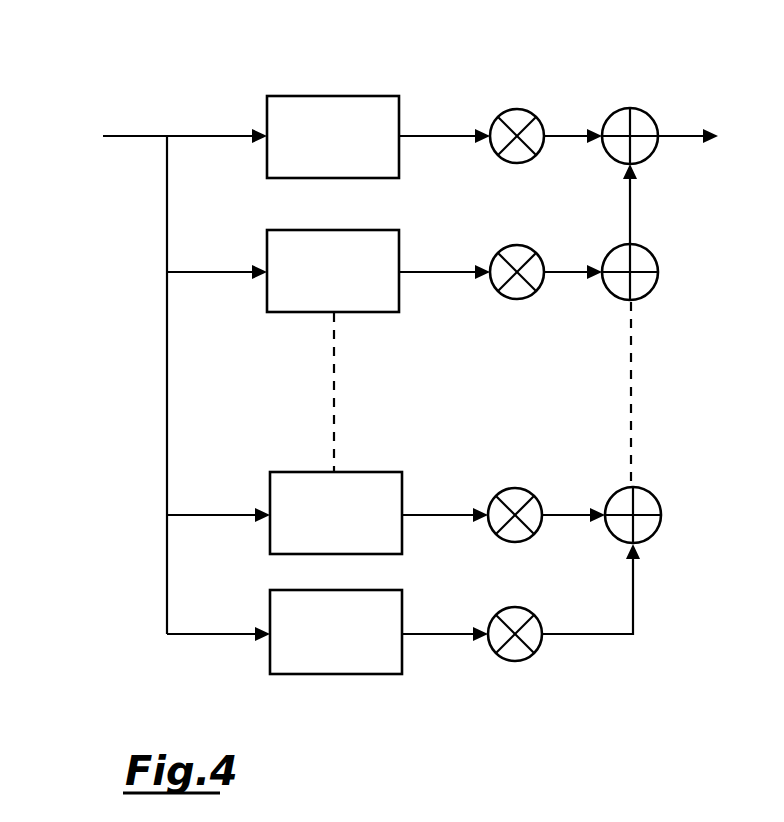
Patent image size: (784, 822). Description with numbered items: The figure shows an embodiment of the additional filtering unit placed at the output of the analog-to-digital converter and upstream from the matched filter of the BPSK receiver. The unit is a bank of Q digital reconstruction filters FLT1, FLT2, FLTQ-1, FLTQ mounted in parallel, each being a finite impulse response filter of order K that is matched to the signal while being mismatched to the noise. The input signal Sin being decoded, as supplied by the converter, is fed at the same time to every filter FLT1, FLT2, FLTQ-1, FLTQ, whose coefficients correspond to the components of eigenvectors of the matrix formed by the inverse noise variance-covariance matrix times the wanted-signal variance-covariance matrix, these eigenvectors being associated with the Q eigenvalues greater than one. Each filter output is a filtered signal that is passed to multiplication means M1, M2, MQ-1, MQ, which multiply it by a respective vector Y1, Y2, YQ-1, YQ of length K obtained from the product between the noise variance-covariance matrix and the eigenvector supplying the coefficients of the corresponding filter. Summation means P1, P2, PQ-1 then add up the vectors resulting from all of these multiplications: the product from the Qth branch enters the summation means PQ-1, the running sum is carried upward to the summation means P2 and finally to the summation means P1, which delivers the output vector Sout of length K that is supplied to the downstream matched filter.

The input signal Sin is at (167, 384).
The output vector Sout is at (710, 144).
The first digital filter FLT1 is at (330, 96).
The second digital filter FLT2 is at (333, 230).
The (Q-1)th digital filter FLTQ-1 is at (335, 472).
The Qth digital filter FLTQ is at (335, 590).
The first multiplication means M1 is at (517, 163).
The second multiplication means M2 is at (518, 300).
The (Q-1)th multiplication means MQ-1 is at (533, 543).
The Qth multiplication means MQ is at (513, 662).
The first multiplying vector Y1 is at (517, 121).
The second multiplying vector Y2 is at (517, 258).
The (Q-1)th multiplying vector YQ-1 is at (517, 498).
The Qth multiplying vector YQ is at (515, 624).
The first summation means P1 is at (630, 108).
The second summation means P2 is at (650, 248).
The (Q-1)th summation means PQ-1 is at (655, 490).